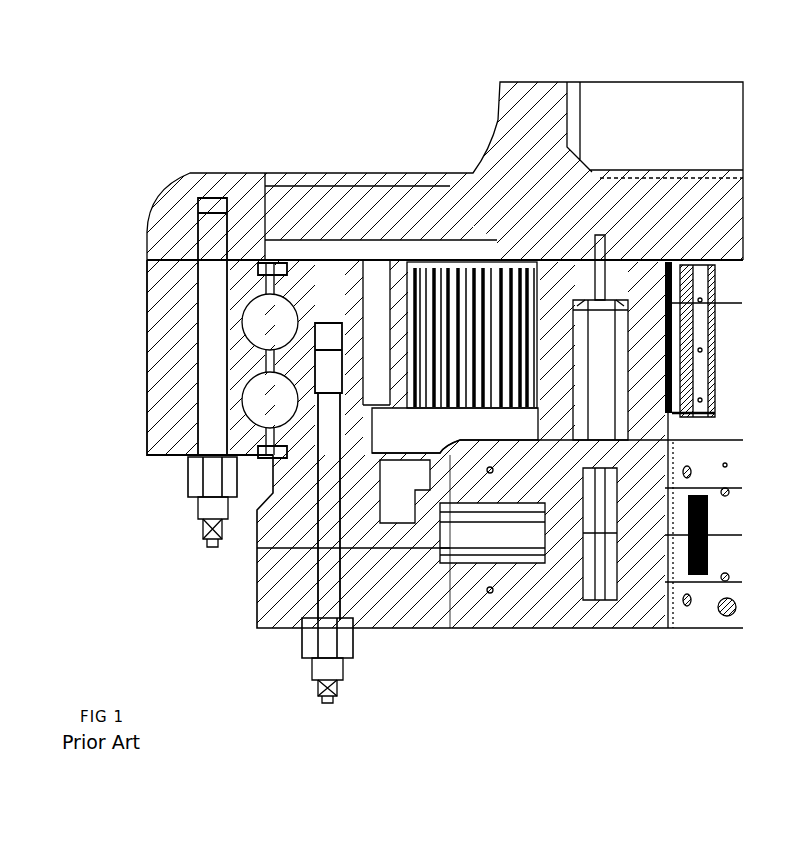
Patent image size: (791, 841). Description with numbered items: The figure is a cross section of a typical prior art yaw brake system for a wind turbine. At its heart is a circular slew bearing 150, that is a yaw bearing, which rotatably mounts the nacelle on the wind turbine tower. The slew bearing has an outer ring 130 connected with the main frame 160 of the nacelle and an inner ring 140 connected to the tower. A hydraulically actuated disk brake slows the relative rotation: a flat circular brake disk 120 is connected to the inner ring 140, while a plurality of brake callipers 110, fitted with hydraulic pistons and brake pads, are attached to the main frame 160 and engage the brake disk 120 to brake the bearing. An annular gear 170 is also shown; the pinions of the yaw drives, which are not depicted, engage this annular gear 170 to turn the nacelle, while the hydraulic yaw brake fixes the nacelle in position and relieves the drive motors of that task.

The brake callipers 110 is at (570, 628).
The brake disk 120 is at (380, 615).
The outer ring 130 is at (167, 457).
The inner ring 140 is at (278, 218).
The slew bearing 150 is at (258, 408).
The main frame 160 is at (343, 210).
The annular gear 170 is at (476, 318).